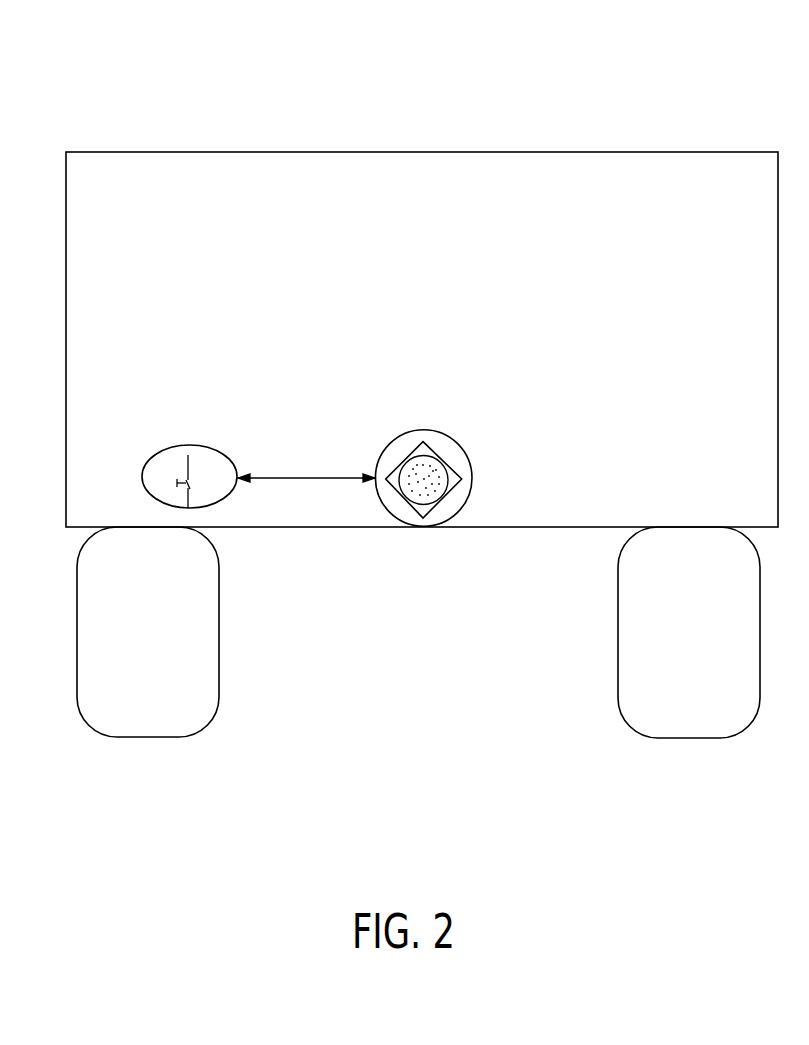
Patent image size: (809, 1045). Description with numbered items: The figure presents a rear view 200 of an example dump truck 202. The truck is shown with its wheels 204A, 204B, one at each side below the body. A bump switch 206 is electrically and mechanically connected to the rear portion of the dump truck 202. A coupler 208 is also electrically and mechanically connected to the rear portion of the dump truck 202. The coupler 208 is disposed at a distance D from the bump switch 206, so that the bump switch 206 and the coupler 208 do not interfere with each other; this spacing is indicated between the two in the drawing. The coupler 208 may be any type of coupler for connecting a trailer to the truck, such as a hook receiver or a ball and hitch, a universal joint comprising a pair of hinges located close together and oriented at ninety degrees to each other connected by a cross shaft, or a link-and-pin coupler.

The rear view 200 is at (152, 98).
The dump truck 202 is at (315, 216).
The wheel 204A is at (173, 627).
The wheel 204B is at (710, 635).
The bump switch 206 is at (147, 463).
The coupler 208 is at (462, 439).